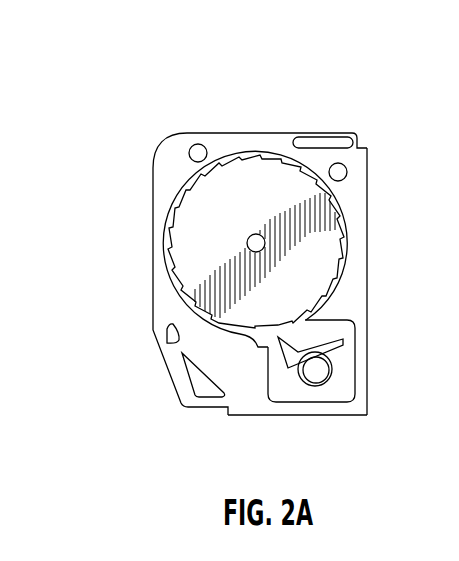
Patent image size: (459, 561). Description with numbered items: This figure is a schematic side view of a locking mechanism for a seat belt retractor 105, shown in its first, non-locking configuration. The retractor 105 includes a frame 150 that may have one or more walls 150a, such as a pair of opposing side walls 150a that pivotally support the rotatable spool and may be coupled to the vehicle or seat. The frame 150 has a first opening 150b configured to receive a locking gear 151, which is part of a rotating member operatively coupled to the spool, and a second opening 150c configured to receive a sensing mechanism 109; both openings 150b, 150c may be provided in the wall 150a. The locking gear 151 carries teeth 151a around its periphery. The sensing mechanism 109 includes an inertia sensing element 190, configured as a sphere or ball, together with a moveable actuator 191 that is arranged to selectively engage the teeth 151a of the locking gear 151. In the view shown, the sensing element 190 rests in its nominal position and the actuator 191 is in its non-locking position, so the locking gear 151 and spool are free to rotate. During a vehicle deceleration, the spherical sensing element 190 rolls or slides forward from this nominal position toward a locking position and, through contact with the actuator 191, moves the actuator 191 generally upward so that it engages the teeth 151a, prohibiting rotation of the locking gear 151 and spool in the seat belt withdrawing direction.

The retractor 105 is at (150, 80).
The frame 150 is at (368, 188).
The wall 150a is at (368, 265).
The first opening 150b is at (272, 156).
The second opening 150c is at (300, 401).
The locking gear 151 is at (168, 238).
The teeth 151a is at (183, 308).
The moveable actuator 191 is at (267, 355).
The inertia sensing element 190 is at (318, 368).
The sensing mechanism 109 is at (343, 349).